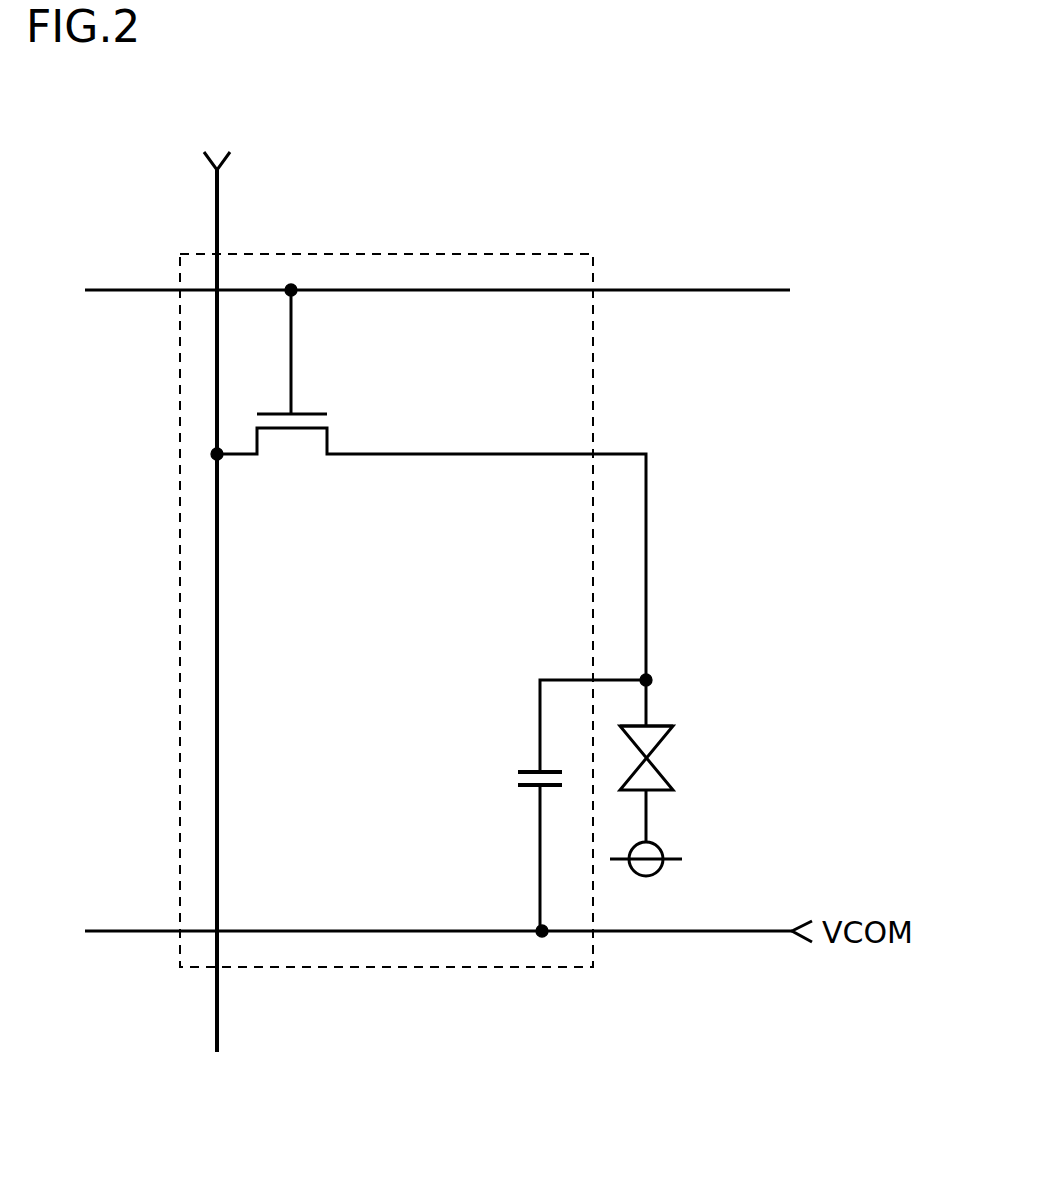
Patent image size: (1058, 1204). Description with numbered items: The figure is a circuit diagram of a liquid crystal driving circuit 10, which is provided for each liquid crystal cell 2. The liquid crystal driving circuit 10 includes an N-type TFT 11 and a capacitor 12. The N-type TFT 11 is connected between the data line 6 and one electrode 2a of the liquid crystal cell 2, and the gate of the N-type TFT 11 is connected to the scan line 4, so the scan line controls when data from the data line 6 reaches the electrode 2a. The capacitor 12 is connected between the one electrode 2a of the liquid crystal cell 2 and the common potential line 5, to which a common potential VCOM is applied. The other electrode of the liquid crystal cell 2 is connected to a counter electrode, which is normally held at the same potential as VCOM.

The liquid crystal driving circuit 10 is at (404, 250).
The scan line 4 is at (647, 291).
The common potential line 5 is at (360, 931).
The data line 6 is at (216, 1018).
The N-type TFT 11 is at (292, 446).
The capacitor 12 is at (527, 770).
The liquid crystal cell 2 is at (660, 776).
The one electrode of liquid crystal cell 2a is at (649, 722).